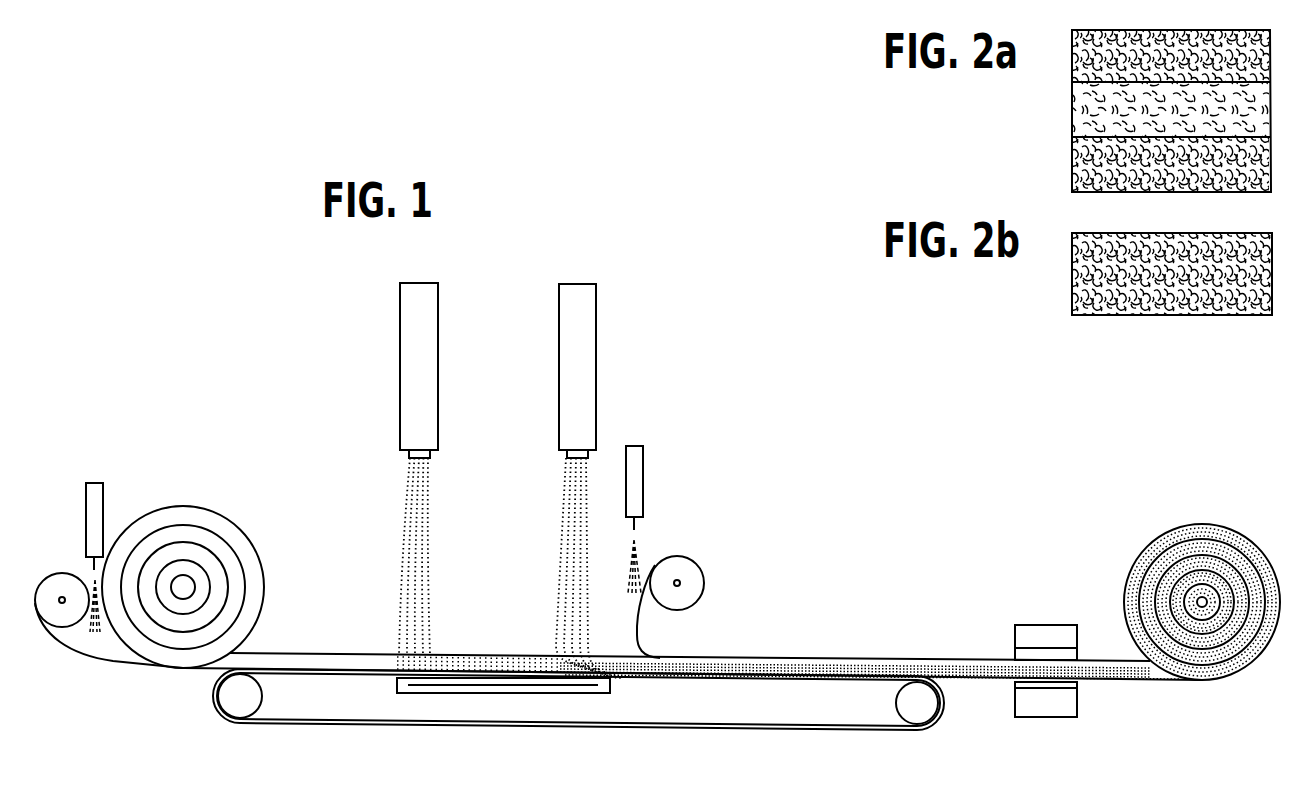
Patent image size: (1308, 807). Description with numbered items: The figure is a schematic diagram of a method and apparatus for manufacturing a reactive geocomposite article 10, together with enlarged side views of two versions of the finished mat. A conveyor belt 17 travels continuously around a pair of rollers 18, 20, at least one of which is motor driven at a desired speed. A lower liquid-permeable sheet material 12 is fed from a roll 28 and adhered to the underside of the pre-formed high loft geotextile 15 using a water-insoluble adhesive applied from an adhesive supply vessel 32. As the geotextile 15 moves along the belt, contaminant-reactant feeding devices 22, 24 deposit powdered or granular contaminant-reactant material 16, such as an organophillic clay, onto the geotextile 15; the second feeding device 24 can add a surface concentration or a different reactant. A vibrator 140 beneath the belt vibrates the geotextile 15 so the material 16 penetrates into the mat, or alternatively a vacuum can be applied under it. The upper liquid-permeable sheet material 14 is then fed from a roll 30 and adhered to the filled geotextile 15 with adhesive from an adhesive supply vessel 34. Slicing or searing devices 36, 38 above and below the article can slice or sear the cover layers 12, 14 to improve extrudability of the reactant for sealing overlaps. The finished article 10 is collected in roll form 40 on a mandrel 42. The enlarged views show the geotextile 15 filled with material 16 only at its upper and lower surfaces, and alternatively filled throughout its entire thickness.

The geocomposite article 10 is at (1144, 506).
The lower liquid-permeable sheet material 12 is at (108, 663).
The upper liquid-permeable sheet material 14 is at (640, 635).
The high loft geotextile 15 is at (297, 650).
The contaminant-reactant material 16 is at (407, 521).
The conveyor belt 17 is at (540, 727).
The roller 18 is at (240, 705).
The roller 20 is at (920, 707).
The contaminant-reactant feeding device 22 is at (440, 317).
The contaminant-reactant feeding device 24 is at (598, 318).
The roll 28 is at (54, 573).
The roll 30 is at (702, 561).
The adhesive supply vessel 32 is at (97, 480).
The adhesive supply vessel 34 is at (643, 463).
The slicing or searing device 36 is at (1053, 635).
The slicing or searing device 38 is at (1053, 710).
The roll form 40 is at (1237, 528).
The mandrel 42 is at (1207, 612).
The vibrator 140 is at (422, 695).